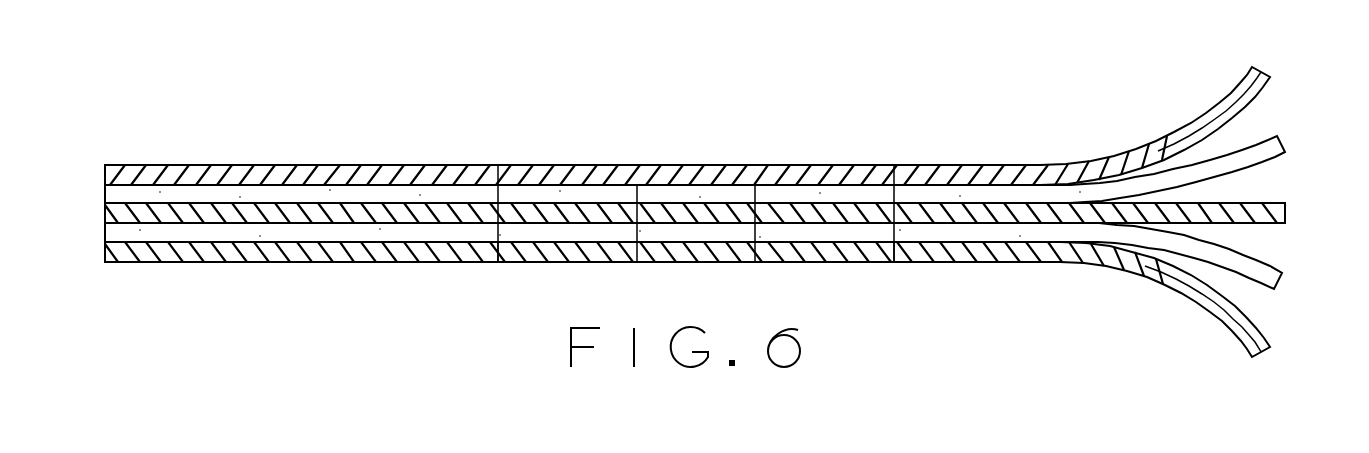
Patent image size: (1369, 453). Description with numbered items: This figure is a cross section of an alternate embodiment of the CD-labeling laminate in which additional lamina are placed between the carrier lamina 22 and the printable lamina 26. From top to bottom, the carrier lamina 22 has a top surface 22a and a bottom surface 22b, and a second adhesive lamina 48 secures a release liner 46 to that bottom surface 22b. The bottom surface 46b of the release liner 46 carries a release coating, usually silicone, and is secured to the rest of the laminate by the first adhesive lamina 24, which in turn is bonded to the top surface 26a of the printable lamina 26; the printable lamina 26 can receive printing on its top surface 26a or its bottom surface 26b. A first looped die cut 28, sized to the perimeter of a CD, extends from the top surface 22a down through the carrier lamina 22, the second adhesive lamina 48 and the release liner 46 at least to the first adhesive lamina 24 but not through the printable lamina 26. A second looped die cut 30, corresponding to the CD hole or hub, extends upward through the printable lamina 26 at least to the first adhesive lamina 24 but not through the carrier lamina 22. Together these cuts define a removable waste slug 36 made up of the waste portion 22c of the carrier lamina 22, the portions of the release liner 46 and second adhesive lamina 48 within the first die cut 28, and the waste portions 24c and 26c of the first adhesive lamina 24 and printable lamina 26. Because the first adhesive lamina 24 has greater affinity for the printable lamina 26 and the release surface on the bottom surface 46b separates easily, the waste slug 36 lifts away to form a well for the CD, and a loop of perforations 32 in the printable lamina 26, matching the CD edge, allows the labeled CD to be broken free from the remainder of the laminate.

The carrier lamina 22 is at (1258, 66).
The top surface of the carrier lamina 22a is at (1236, 75).
The bottom surface of the carrier lamina 22b is at (1268, 98).
The waste portion of the carrier lamina 22c is at (622, 175).
The first adhesive lamina 24 is at (1265, 277).
The waste portion of the first adhesive lamina 24c is at (690, 192).
The printable lamina 26 is at (1264, 350).
The top surface of the printable lamina 26a is at (1258, 321).
The bottom surface of the printable lamina 26b is at (1236, 351).
The waste portion of the printable lamina 26c is at (687, 252).
The first looped die cut 28 is at (498, 157).
The second looped die cut 30 is at (638, 271).
The loop of perforations 32 is at (501, 272).
The waste slug 36 is at (580, 452).
The release liner 46 is at (1288, 210).
The bottom surface of the release liner 46b is at (1270, 229).
The second adhesive lamina 48 is at (1281, 146).